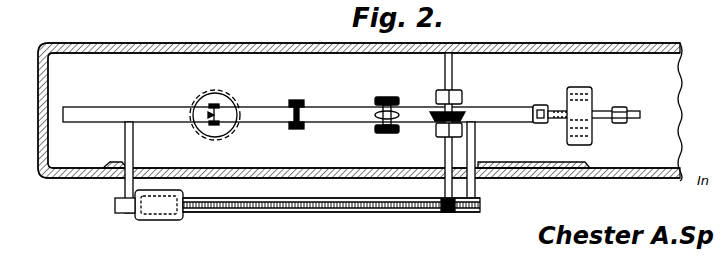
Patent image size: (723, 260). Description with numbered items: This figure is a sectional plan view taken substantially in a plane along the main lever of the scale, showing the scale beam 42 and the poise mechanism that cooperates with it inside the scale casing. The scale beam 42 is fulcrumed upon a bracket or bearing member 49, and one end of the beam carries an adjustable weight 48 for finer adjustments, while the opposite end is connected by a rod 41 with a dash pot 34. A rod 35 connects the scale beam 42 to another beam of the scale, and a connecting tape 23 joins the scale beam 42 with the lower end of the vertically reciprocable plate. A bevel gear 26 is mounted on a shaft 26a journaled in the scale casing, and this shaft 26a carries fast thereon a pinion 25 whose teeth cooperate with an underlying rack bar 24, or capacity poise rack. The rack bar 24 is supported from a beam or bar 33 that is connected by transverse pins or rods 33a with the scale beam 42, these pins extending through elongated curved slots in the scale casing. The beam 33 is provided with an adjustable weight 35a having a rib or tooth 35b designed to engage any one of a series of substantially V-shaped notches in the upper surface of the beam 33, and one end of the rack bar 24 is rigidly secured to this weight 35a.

The connecting tape 23 is at (302, 129).
The rack bar 24 is at (393, 205).
The pinion 25 is at (441, 213).
The bevel gear 26 is at (441, 111).
The shaft 26a is at (446, 149).
The beam 33 is at (313, 212).
The transverse pins 33a is at (476, 150).
The dash pot 34 is at (227, 92).
The rod 35 is at (379, 123).
The adjustable weight 35a is at (178, 220).
The rib 35b is at (134, 215).
The rod 41 is at (222, 119).
The scale beam 42 is at (348, 107).
The adjustable weight 48 is at (590, 99).
The bracket 49 is at (458, 123).